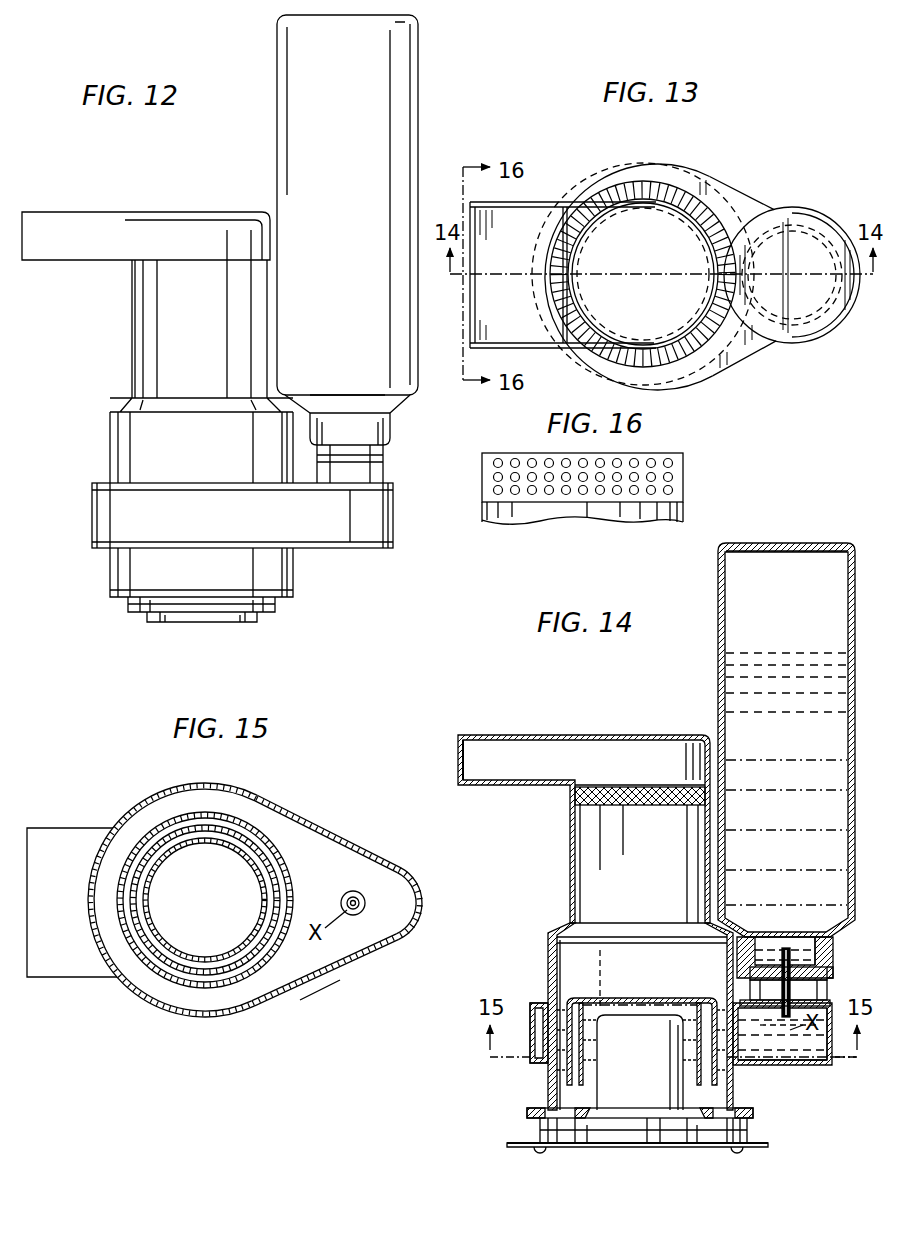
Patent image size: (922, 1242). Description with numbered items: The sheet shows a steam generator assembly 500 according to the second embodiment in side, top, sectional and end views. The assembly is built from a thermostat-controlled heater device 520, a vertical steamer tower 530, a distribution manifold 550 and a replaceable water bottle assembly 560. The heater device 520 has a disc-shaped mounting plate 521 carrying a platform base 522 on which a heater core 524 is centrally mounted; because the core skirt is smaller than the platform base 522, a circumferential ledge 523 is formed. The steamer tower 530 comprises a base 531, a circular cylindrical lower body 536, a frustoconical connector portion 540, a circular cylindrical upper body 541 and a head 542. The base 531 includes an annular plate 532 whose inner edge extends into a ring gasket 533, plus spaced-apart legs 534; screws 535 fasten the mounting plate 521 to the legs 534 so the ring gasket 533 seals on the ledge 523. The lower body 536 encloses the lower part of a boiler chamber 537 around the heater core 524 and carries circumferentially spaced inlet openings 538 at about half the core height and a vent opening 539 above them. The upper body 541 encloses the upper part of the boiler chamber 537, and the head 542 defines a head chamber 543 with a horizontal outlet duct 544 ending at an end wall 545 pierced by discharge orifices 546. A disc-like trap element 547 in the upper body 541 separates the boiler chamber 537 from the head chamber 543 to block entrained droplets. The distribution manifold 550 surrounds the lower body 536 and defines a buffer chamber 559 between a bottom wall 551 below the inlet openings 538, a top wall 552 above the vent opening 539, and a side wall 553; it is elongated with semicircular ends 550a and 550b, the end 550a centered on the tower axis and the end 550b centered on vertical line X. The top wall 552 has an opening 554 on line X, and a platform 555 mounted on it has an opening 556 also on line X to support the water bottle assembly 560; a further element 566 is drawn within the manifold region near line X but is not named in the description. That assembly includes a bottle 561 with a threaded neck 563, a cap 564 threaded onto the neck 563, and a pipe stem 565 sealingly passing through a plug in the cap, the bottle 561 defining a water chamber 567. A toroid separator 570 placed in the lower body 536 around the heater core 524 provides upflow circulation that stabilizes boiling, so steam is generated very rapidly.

In FIG. 12, the steam generator assembly 500 is at (140, 176).
In FIG. 14, the steam generator assembly 500 is at (557, 698).
In FIG. 12, the thermostat-controlled heater device 520 is at (288, 601).
In FIG. 14, the thermostat-controlled heater device 520 is at (771, 1151).
In FIG. 14, the disc-shaped mounting plate 521 is at (707, 1150).
In FIG. 14, the platform base 522 is at (682, 1137).
In FIG. 14, the circumferential ledge 523 is at (727, 1120).
In FIG. 14, the heater core 524 is at (658, 1082).
In FIG. 12, the vertical steamer tower 530 is at (130, 353).
In FIG. 14, the vertical steamer tower 530 is at (572, 893).
In FIG. 14, the base 531 is at (527, 1113).
In FIG. 14, the annular plate 532 is at (557, 1120).
In FIG. 14, the ring gasket 533 is at (587, 1113).
In FIG. 14, the legs 534 is at (533, 1127).
In FIG. 14, the screws 535 is at (540, 1152).
In FIG. 14, the circular cylindrical lower body 536 is at (547, 958).
In FIG. 14, the boiler chamber 537 is at (665, 969).
In FIG. 14, the inlet openings 538 is at (535, 1063).
In FIG. 15, the inlet openings 538 is at (150, 833).
In FIG. 14, the vent opening 539 is at (713, 1020).
In FIG. 13, the frustoconical connector portion 540 is at (642, 185).
In FIG. 14, the frustoconical connector portion 540 is at (557, 935).
In FIG. 14, the circular cylindrical upper body 541 is at (570, 871).
In FIG. 14, the head 542 is at (617, 735).
In FIG. 14, the head chamber 543 is at (668, 770).
In FIG. 13, the outlet duct 544 is at (527, 227).
In FIG. 14, the outlet duct 544 is at (482, 735).
In FIG. 16, the end wall 545 is at (677, 473).
In FIG. 14, the end wall 545 is at (466, 768).
In FIG. 16, the discharge orifices 546 is at (565, 495).
In FIG. 14, the disc-like trap element 547 is at (573, 798).
In FIG. 12, the distribution manifold 550 is at (358, 552).
In FIG. 13, the distribution manifold 550 is at (731, 183).
In FIG. 14, the distribution manifold 550 is at (808, 1071).
In FIG. 15, the distribution manifold 550 is at (281, 806).
In FIG. 15, the semicircular end 550a is at (220, 784).
In FIG. 15, the semicircular end 550b is at (382, 862).
In FIG. 14, the bottom wall 551 is at (743, 1065).
In FIG. 14, the top wall 552 is at (540, 1000).
In FIG. 15, the side wall 553 is at (287, 997).
In FIG. 14, the opening 554 is at (832, 973).
In FIG. 14, the platform 555 is at (740, 977).
In FIG. 14, the opening 556 is at (745, 992).
In FIG. 14, the buffer chamber 559 is at (830, 1045).
In FIG. 15, the buffer chamber 559 is at (348, 877).
In FIG. 12, the replaceable water bottle assembly 560 is at (418, 58).
In FIG. 13, the replaceable water bottle assembly 560 is at (818, 220).
In FIG. 14, the replaceable water bottle assembly 560 is at (717, 578).
In FIG. 14, the bottle 561 is at (718, 628).
In FIG. 14, the threaded neck 563 is at (745, 935).
In FIG. 14, the cap 564 is at (840, 947).
In FIG. 14, the pipe stem 565 is at (770, 947).
In FIG. 14, the outlet passage 566 is at (781, 1040).
In FIG. 14, the water chamber 567 is at (808, 722).
In FIG. 14, the toroid separator 570 is at (573, 998).